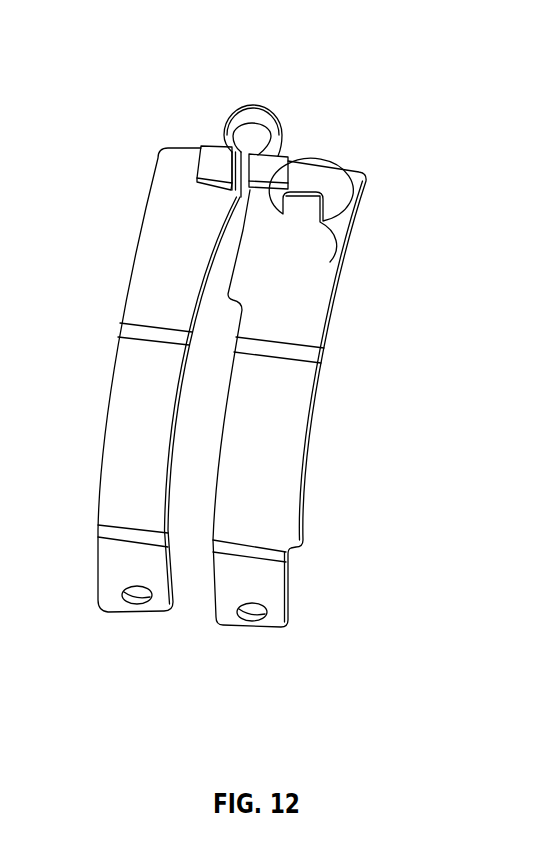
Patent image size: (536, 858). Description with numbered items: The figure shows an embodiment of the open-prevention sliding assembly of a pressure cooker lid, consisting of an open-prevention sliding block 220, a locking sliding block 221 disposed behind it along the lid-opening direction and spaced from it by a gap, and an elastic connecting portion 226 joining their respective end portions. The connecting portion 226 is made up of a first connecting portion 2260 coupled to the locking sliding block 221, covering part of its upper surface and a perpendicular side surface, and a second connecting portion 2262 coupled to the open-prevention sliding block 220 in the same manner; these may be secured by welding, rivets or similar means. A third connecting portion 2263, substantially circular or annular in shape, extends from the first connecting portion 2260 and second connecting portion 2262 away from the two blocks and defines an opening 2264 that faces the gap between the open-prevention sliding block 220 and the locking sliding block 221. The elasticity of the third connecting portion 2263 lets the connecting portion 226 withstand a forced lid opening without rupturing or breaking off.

The open-prevention sliding block 220 is at (152, 243).
The locking sliding block 221 is at (318, 297).
The connecting portion 226 is at (250, 103).
The third connecting portion 2263 is at (274, 117).
The second connecting portion 2262 is at (217, 160).
The first connecting portion 2260 is at (277, 167).
The opening 2264 is at (249, 153).